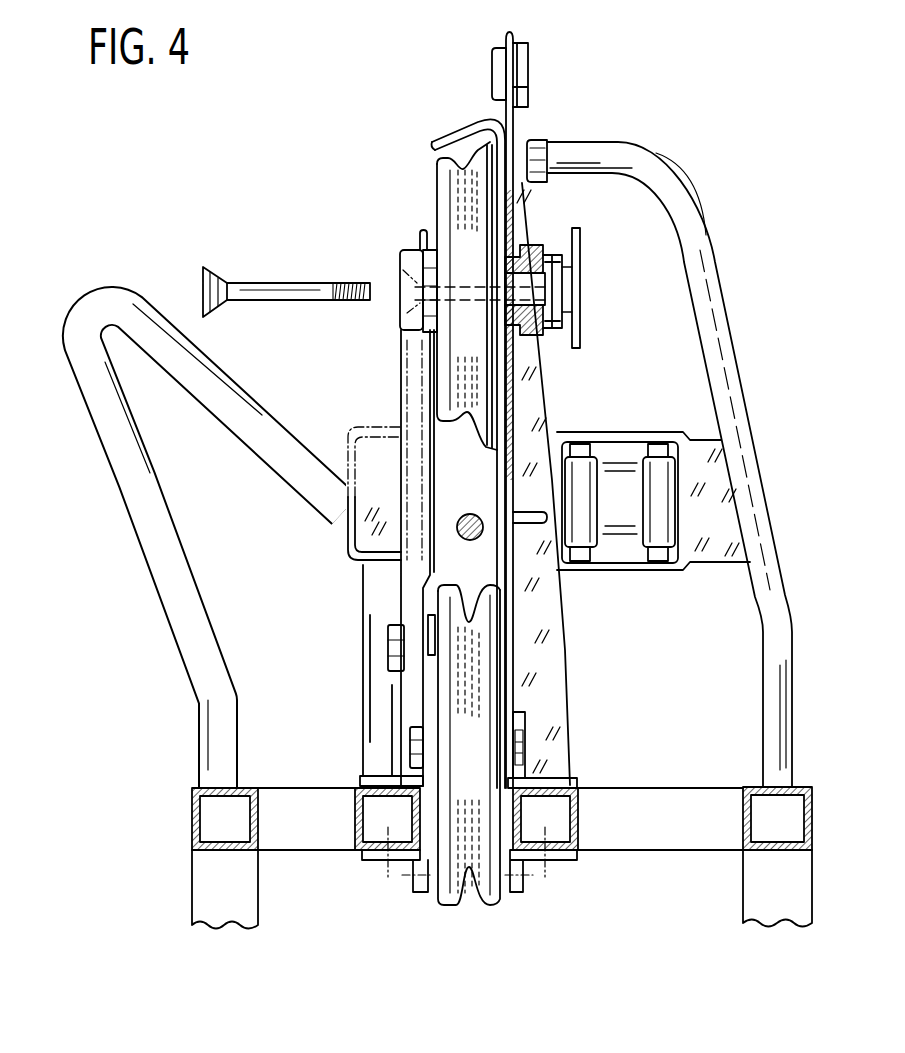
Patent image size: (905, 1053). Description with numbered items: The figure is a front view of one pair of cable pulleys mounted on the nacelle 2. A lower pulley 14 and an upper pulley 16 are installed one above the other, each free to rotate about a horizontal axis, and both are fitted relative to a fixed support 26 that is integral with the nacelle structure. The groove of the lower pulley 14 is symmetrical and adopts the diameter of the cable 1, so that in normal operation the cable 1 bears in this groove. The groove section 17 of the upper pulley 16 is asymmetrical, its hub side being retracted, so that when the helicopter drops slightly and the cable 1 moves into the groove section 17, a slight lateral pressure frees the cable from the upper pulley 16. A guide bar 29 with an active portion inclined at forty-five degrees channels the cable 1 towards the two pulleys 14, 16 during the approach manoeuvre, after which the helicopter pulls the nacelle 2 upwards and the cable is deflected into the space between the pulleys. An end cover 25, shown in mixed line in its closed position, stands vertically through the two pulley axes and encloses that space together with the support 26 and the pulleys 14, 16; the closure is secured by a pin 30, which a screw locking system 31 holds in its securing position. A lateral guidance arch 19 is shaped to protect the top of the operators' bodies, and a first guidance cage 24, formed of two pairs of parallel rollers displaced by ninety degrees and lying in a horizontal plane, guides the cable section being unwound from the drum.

The cable 1 is at (482, 538).
The nacelle 2 is at (183, 867).
The lower pulley 14 is at (438, 900).
The upper pulley 16 is at (437, 189).
The groove section 17 is at (465, 168).
The lateral guidance arch 19 is at (694, 236).
The first guidance cage 24 is at (623, 438).
The end cover 25 is at (401, 380).
The fixed support 26 is at (550, 653).
The guide bar 29 is at (107, 297).
The pin 30 is at (293, 290).
The screw locking system 31 is at (562, 258).